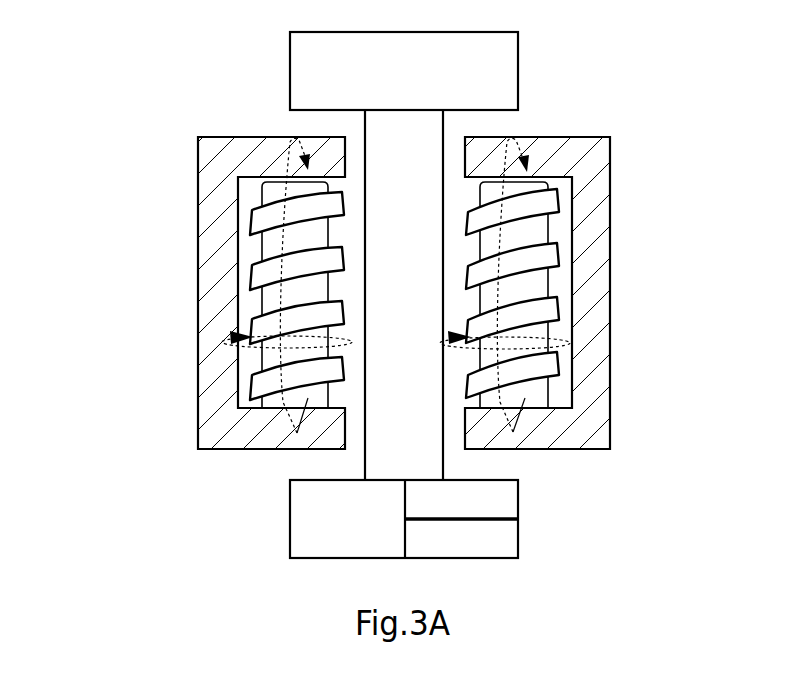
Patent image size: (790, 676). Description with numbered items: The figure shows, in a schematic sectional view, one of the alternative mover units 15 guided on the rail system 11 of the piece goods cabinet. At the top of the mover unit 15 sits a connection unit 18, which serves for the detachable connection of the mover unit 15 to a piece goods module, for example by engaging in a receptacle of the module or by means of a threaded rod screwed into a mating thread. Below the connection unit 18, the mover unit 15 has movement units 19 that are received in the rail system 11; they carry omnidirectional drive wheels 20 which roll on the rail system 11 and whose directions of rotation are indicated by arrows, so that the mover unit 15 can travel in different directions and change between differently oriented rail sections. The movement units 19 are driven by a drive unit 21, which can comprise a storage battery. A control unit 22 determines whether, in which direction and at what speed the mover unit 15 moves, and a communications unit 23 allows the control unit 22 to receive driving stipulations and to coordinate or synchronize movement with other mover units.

The mover unit 15 is at (130, 71).
The connection unit 18 is at (502, 73).
The rail system 11 is at (207, 255).
The movement unit 19 is at (405, 285).
The drive wheel 20 is at (262, 303).
The drive unit 21 is at (403, 521).
The control unit 22 is at (505, 502).
The communications unit 23 is at (505, 542).